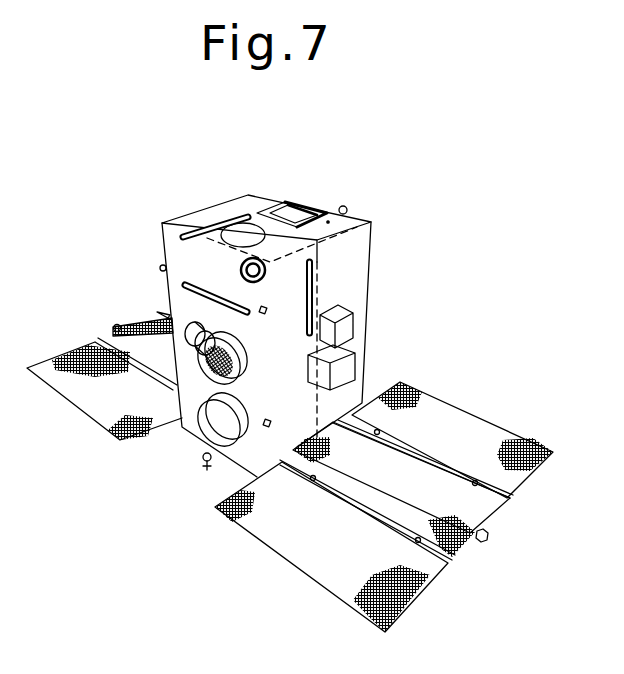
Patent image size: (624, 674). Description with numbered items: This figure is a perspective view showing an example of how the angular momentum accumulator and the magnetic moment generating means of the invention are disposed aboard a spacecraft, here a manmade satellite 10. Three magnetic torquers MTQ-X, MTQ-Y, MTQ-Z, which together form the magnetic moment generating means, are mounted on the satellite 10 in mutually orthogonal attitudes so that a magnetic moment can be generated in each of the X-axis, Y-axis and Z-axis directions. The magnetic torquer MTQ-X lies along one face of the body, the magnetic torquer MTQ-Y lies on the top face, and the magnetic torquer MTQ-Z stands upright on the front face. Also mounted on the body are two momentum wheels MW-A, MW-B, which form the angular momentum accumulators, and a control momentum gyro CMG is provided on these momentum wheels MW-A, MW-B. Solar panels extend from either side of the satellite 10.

The manmade satellite 10 is at (183, 578).
The magnetic torquer MTQ-X is at (188, 283).
The magnetic torquer MTQ-Y is at (247, 215).
The magnetic torquer MTQ-Z is at (318, 285).
The control momentum gyro CMG is at (192, 342).
The momentum wheel MW-A is at (202, 352).
The momentum wheel MW-B is at (217, 420).